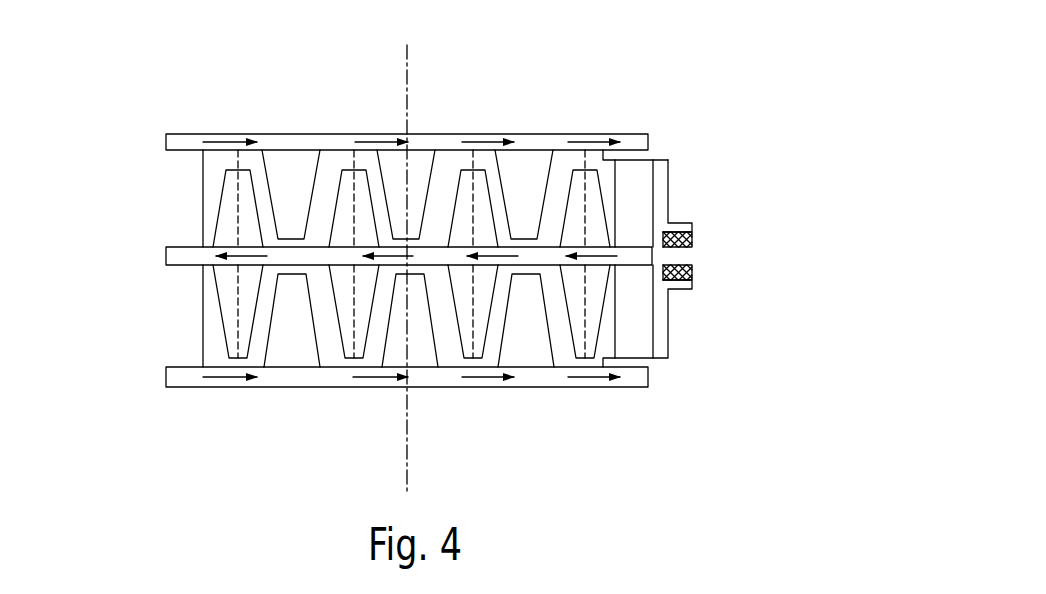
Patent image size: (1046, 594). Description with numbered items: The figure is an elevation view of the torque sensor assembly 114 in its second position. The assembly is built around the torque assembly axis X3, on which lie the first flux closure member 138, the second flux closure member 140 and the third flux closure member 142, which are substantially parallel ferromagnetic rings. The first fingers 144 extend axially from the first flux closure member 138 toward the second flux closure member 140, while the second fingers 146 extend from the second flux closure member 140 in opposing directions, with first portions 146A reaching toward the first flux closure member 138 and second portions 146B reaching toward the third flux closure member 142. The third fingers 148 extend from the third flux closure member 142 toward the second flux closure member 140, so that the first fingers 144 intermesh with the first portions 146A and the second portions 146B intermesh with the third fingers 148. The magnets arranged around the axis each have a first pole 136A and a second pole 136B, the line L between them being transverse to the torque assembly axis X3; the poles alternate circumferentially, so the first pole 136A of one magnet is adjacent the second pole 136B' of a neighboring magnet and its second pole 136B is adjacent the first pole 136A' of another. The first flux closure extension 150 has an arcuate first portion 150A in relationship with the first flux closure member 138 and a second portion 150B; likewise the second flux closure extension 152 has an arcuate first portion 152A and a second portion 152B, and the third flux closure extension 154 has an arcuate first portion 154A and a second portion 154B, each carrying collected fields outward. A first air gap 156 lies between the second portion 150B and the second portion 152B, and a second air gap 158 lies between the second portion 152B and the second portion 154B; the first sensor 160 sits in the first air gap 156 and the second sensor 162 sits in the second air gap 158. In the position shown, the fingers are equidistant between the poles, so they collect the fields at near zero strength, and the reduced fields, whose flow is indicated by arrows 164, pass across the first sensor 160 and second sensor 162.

The torque sensor assembly 114 is at (660, 120).
The first pole 136A is at (411, 364).
The first pole of third magnet 136A' is at (262, 369).
The second pole 136B is at (355, 384).
The second pole of second magnet 136B' is at (505, 349).
The first flux closure member 138 is at (478, 133).
The second flux closure member 140 is at (166, 253).
The third flux closure member 142 is at (582, 387).
The first plurality of fingers 144 is at (324, 166).
The second plurality of fingers 146 is at (215, 213).
The first portions 146A is at (454, 186).
The second portions 146B is at (454, 317).
The third plurality of fingers 148 is at (264, 348).
The first flux closure extension 150 is at (673, 160).
The arcuate first portion 150A is at (632, 150).
The second portion 150B is at (684, 159).
The second flux closure extension 152 is at (701, 252).
The arcuate first portion 152A is at (662, 307).
The second portion 152B is at (661, 205).
The third flux closure extension 154 is at (680, 355).
The arcuate first portion 154A is at (647, 387).
The second portion 154B is at (702, 279).
The first air gap 156 is at (704, 227).
The second air gap 158 is at (705, 285).
The first magnetic sensor 160 is at (672, 200).
The second magnetic sensor 162 is at (680, 290).
The arrows 164 is at (227, 134).
The line L is at (355, 207).
The torque assembly axis X3 is at (407, 70).